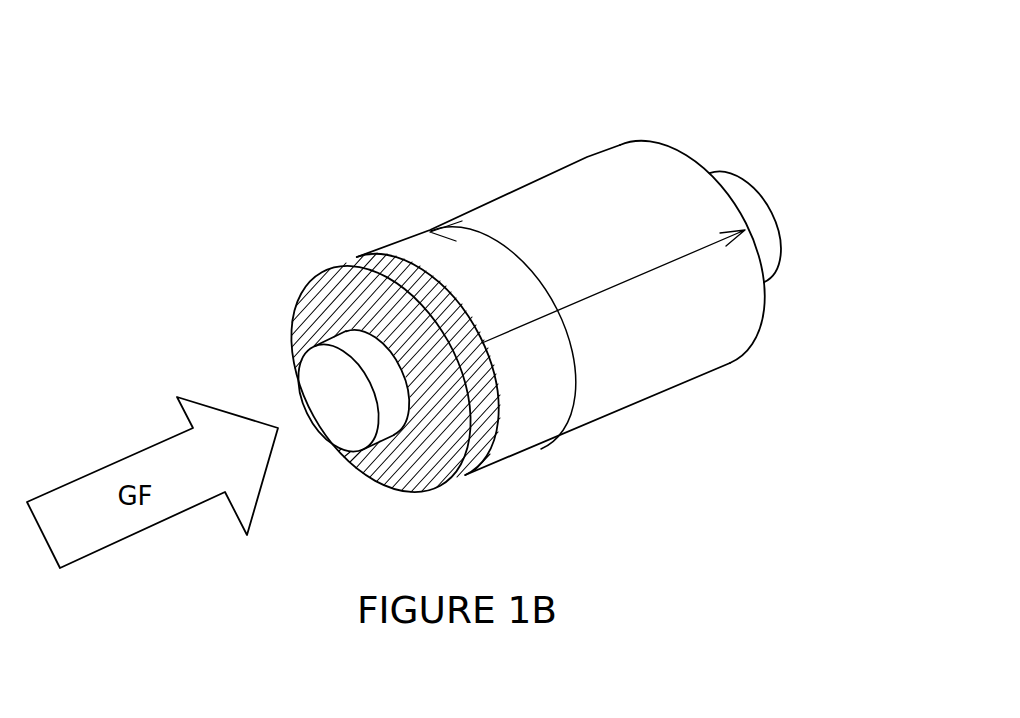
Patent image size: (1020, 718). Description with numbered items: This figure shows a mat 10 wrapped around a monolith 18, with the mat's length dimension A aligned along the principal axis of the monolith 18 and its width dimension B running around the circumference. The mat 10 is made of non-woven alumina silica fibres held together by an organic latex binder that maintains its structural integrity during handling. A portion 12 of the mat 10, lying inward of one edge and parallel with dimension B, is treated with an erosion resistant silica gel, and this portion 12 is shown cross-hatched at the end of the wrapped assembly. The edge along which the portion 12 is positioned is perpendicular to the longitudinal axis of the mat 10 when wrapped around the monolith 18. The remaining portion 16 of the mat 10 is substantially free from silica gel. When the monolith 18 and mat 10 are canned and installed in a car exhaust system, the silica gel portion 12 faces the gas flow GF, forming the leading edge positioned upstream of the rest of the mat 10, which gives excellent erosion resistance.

The mat 10 is at (569, 288).
The portion 12 is at (475, 457).
The remaining portion 16 is at (693, 352).
The monolith 18 is at (770, 250).